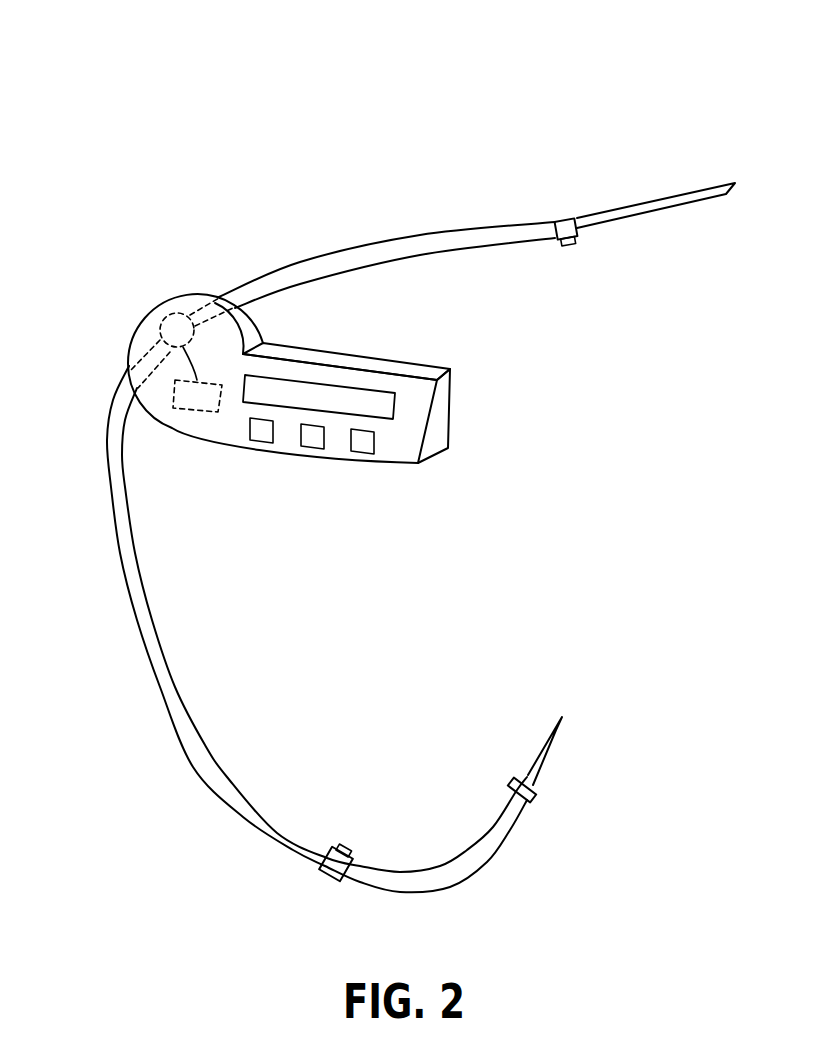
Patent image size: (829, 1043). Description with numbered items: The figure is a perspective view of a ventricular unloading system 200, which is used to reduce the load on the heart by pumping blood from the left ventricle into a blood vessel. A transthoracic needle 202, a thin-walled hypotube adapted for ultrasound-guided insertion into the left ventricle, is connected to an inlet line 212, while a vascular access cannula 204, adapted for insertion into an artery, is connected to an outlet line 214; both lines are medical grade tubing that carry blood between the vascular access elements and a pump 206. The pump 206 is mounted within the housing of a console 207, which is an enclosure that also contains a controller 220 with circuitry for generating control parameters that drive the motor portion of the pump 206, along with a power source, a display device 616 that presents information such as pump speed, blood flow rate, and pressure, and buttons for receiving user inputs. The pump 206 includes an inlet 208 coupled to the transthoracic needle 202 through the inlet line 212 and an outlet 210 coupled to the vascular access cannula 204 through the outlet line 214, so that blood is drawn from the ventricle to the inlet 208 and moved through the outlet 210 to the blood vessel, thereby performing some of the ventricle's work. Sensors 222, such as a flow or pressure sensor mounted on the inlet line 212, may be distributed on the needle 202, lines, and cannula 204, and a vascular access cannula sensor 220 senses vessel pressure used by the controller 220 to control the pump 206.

The ventricular unloading system 200 is at (155, 76).
The transthoracic needle 202 is at (640, 202).
The vascular access cannula 204 is at (550, 750).
The pump 206 is at (158, 330).
The console 207 is at (375, 465).
The inlet 208 is at (194, 316).
The outlet 210 is at (130, 373).
The inlet line 212 is at (348, 252).
The outlet line 214 is at (148, 658).
The controller 220 is at (200, 413).
The sensors 222 is at (565, 245).
The display device 616 is at (338, 383).